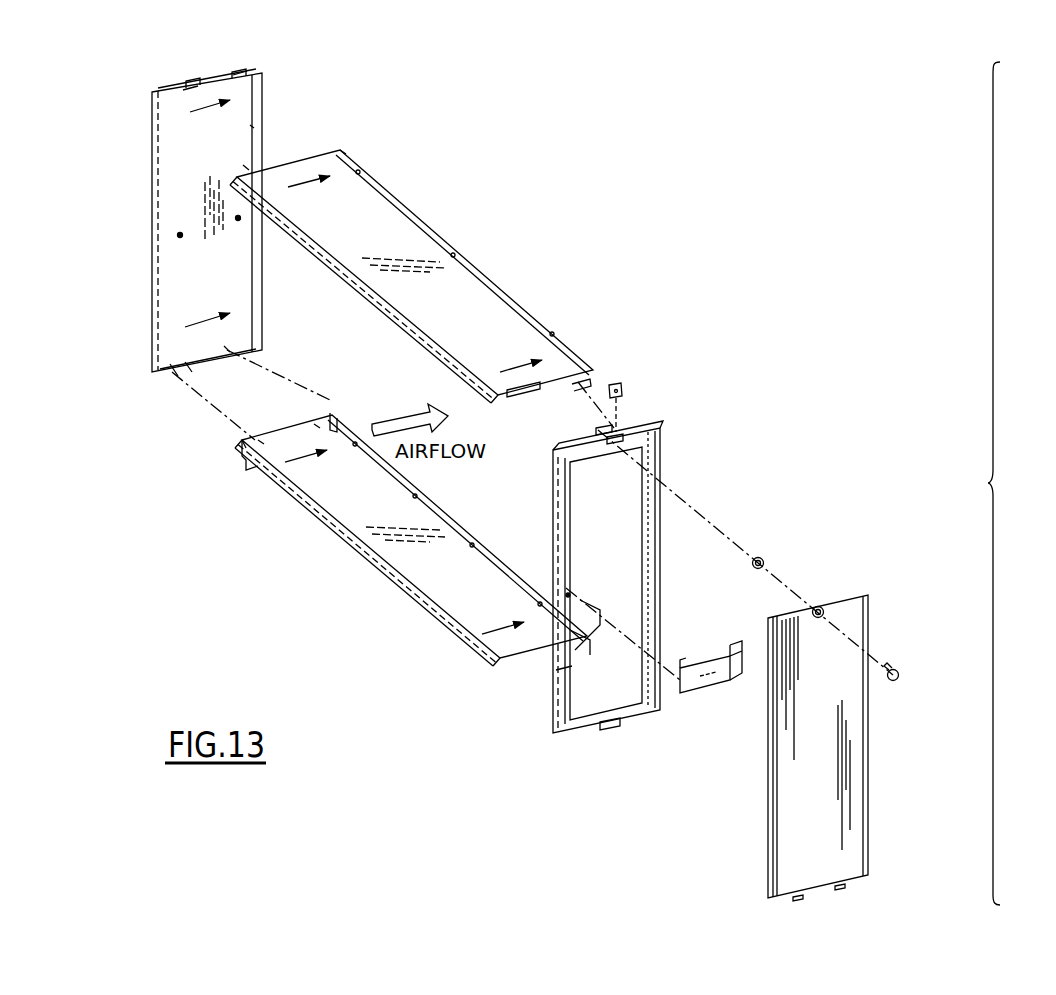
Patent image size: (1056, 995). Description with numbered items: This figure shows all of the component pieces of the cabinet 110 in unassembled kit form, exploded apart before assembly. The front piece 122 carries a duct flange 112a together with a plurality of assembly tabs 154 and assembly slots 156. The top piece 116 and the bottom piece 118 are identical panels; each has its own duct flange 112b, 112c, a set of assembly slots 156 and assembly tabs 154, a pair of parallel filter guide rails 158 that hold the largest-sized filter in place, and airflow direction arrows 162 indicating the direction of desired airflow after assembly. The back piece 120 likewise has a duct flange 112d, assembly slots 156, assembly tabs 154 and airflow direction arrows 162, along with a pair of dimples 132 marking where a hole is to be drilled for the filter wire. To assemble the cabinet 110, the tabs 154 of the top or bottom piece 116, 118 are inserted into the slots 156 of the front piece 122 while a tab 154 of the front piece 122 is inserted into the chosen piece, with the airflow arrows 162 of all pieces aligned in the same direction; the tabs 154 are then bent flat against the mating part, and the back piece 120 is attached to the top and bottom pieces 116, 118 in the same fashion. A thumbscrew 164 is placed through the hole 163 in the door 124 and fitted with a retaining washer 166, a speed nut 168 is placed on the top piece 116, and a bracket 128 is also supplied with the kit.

The cabinet 110 is at (1020, 483).
The duct flange 112a is at (545, 705).
The duct flange 112b is at (270, 508).
The duct flange 112c is at (385, 330).
The duct flange 112d is at (178, 285).
The top piece 116 is at (455, 245).
The bottom piece 118 is at (352, 565).
The back piece 120 is at (152, 182).
The front piece 122 is at (665, 460).
The door 124 is at (870, 780).
The bracket 128 is at (698, 682).
The dimples 132 is at (238, 221).
The assembly tabs 154 is at (246, 168).
The assembly slots 156 is at (242, 72).
The filter guide rails 158 is at (338, 410).
The airflow direction arrows 162 is at (212, 108).
The hole 163 is at (819, 607).
The thumbscrew 164 is at (893, 670).
The retaining washer 166 is at (760, 558).
The speed nut 168 is at (624, 392).